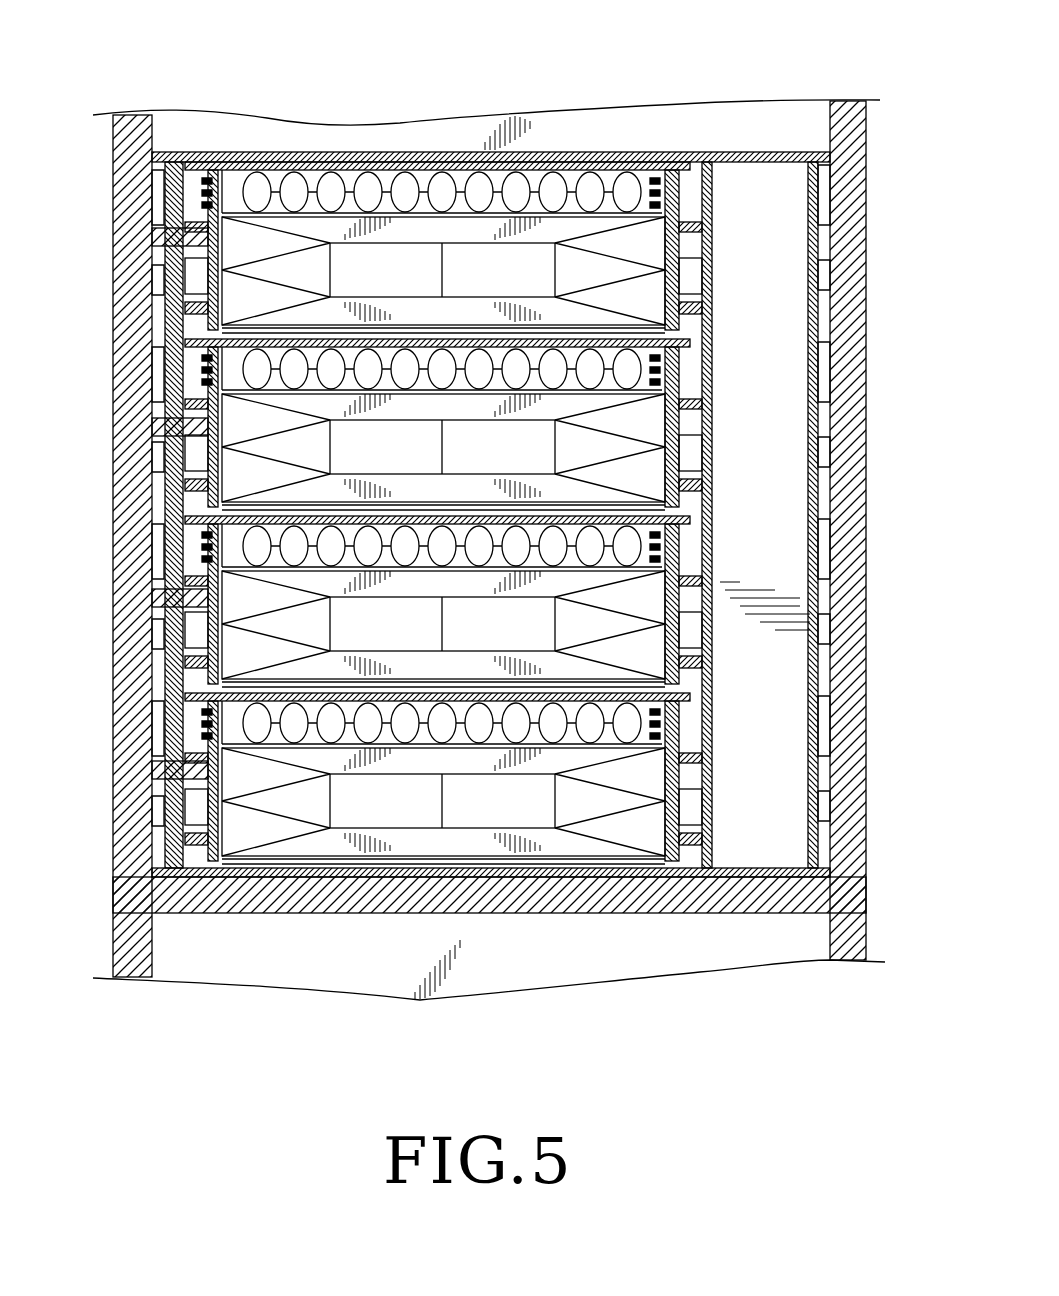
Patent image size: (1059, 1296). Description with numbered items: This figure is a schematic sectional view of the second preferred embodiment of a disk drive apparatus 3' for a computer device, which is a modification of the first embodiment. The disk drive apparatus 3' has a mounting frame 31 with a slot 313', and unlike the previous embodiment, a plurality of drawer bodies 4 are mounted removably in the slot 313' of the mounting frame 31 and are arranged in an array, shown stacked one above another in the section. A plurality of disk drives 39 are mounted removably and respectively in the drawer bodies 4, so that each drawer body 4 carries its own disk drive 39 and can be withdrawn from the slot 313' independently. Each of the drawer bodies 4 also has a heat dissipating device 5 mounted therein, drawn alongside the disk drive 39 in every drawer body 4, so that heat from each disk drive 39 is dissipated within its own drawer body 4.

The disk drive apparatus 3' is at (489, 505).
The slot 313' is at (760, 451).
The side wall 31 is at (165, 182).
The drawer body 4 is at (205, 237).
The heat dissipating device 5 is at (652, 178).
The disk drive 39 is at (410, 268).